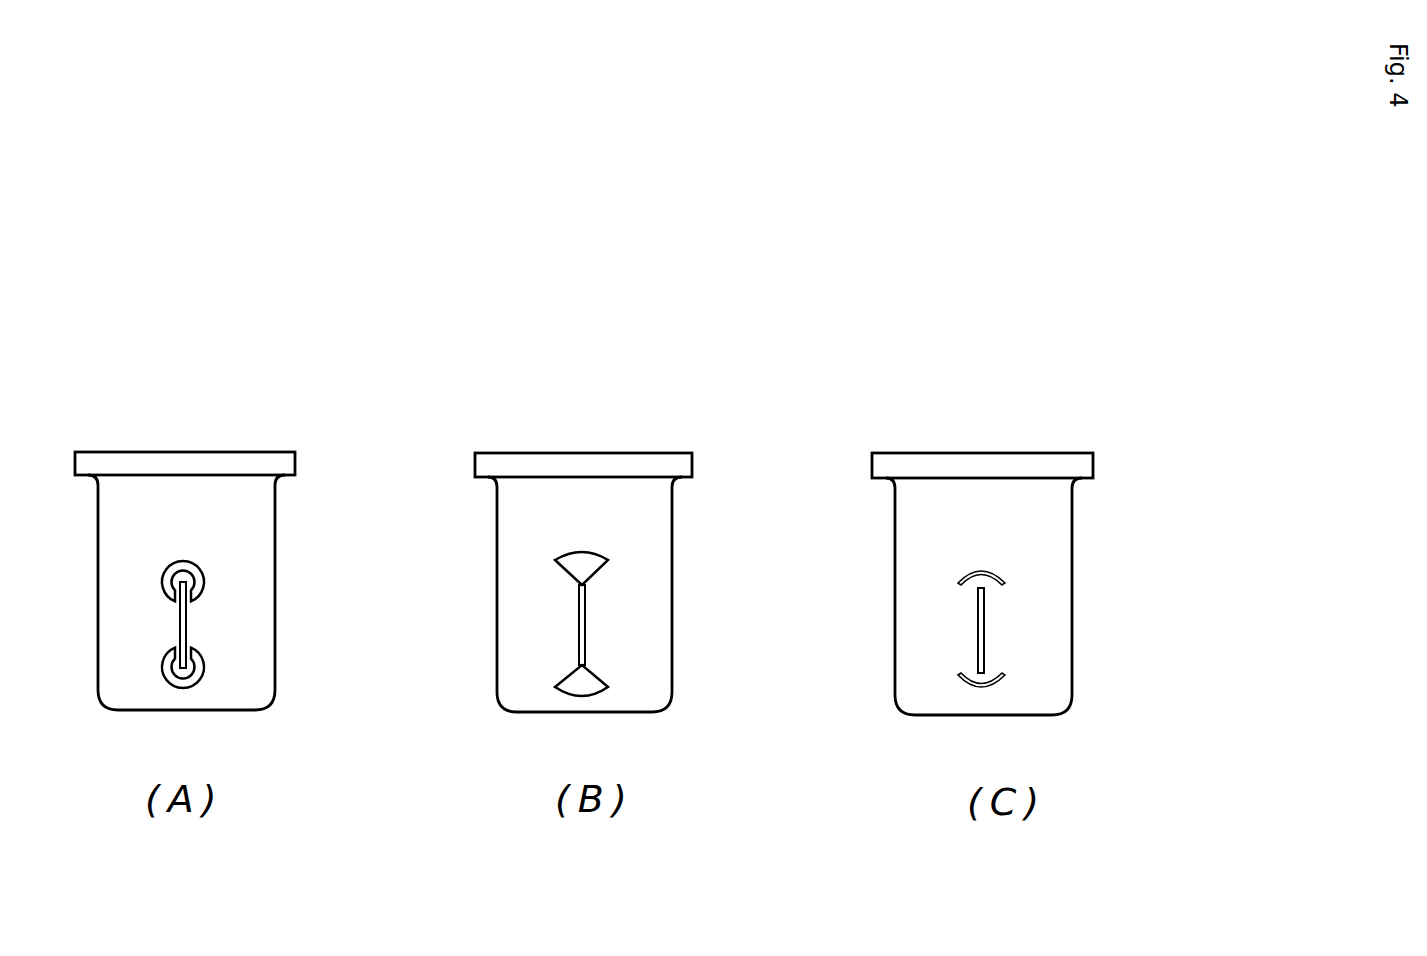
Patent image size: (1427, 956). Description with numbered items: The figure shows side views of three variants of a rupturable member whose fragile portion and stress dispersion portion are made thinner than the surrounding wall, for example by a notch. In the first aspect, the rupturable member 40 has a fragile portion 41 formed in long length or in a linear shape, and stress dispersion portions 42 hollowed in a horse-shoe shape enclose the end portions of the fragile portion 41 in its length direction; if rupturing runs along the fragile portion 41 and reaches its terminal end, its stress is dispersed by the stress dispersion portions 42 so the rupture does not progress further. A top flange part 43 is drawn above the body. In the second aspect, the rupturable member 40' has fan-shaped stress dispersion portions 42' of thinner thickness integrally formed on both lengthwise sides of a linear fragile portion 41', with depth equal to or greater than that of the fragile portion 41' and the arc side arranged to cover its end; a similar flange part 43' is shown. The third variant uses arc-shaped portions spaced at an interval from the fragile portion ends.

The rupturable member 40 is at (231, 555).
The fragile portion 41 is at (271, 625).
The stress dispersion portion 42 is at (263, 647).
The lid 43 is at (231, 470).
The rupturable member 40' is at (635, 562).
The fragile portion 41' is at (674, 625).
The fan-shaped stress dispersion portion 42' is at (658, 644).
The lid 43' is at (635, 471).